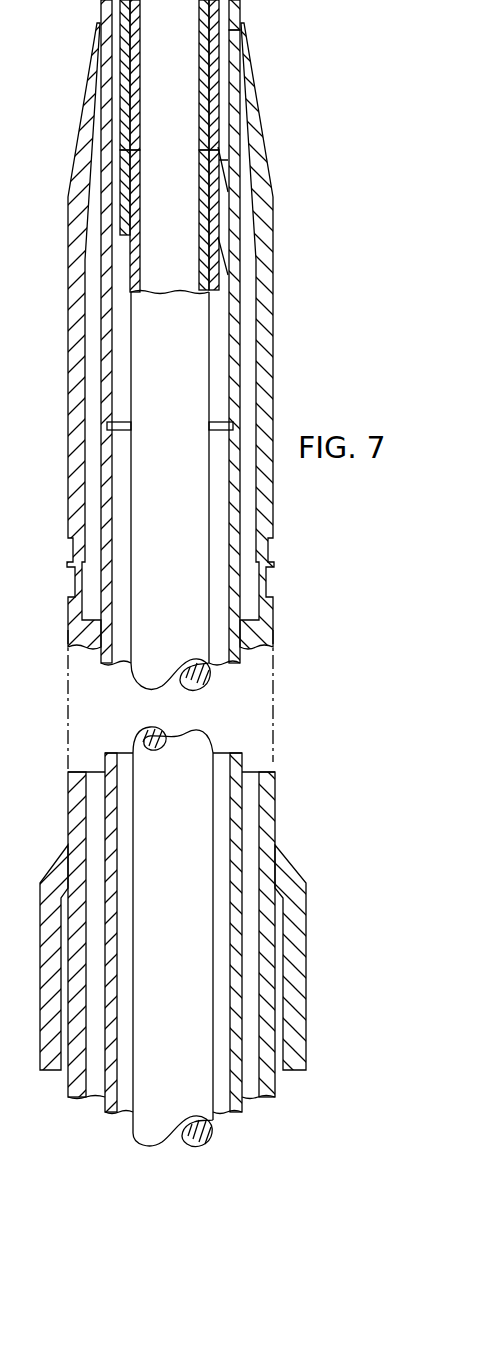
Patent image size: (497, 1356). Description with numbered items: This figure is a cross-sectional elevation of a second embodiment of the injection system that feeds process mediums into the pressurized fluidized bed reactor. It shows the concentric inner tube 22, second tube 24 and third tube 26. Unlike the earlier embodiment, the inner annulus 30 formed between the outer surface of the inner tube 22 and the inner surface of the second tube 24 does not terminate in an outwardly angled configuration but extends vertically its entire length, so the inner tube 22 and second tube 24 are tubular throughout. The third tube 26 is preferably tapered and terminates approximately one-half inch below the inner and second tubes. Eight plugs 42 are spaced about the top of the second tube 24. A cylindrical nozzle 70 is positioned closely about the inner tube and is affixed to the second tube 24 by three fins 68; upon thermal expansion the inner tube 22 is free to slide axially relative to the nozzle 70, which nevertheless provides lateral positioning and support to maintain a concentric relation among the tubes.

The inner tube 22 is at (205, 278).
The second tube 24 is at (232, 367).
The third tube 26 is at (265, 395).
The inner annulus 30 is at (223, 330).
The plugs 42 is at (238, 2).
The fins 68 is at (223, 218).
The cylindrical nozzle 70 is at (213, 60).